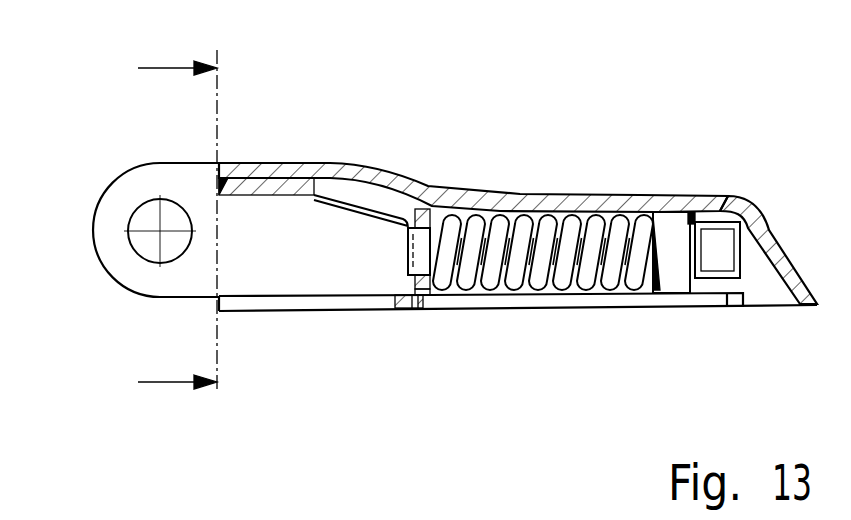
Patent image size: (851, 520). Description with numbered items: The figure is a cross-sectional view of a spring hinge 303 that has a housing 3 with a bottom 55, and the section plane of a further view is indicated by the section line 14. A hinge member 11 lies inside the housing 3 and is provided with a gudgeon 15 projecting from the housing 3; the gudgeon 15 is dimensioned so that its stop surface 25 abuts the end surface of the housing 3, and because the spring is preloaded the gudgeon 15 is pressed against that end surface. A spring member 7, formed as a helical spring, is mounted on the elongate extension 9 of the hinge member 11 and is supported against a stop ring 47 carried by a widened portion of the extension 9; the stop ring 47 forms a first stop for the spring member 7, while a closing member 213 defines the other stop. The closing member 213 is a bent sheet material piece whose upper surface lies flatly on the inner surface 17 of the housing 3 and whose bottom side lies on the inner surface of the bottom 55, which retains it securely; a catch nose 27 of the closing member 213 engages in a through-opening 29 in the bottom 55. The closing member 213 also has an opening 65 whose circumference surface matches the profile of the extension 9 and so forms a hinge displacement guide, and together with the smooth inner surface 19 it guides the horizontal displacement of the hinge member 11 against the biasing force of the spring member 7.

The spring hinge 303 is at (543, 150).
The section line 14- 14 is at (177, 207).
The gudgeon 15 is at (113, 223).
The stop surface 25 is at (213, 173).
The inner surface 17 is at (270, 174).
The housing 3 is at (742, 208).
The closing member 213 is at (354, 200).
The opening 65 is at (428, 210).
The catch nose 27 is at (403, 310).
The through-opening 29 is at (432, 310).
The spring member 7 is at (467, 287).
The stop ring 47 is at (675, 242).
The elongate extension 9 is at (712, 252).
The hinge member 11 is at (297, 260).
The bottom 55 is at (540, 302).
The inner surface 19 is at (267, 287).